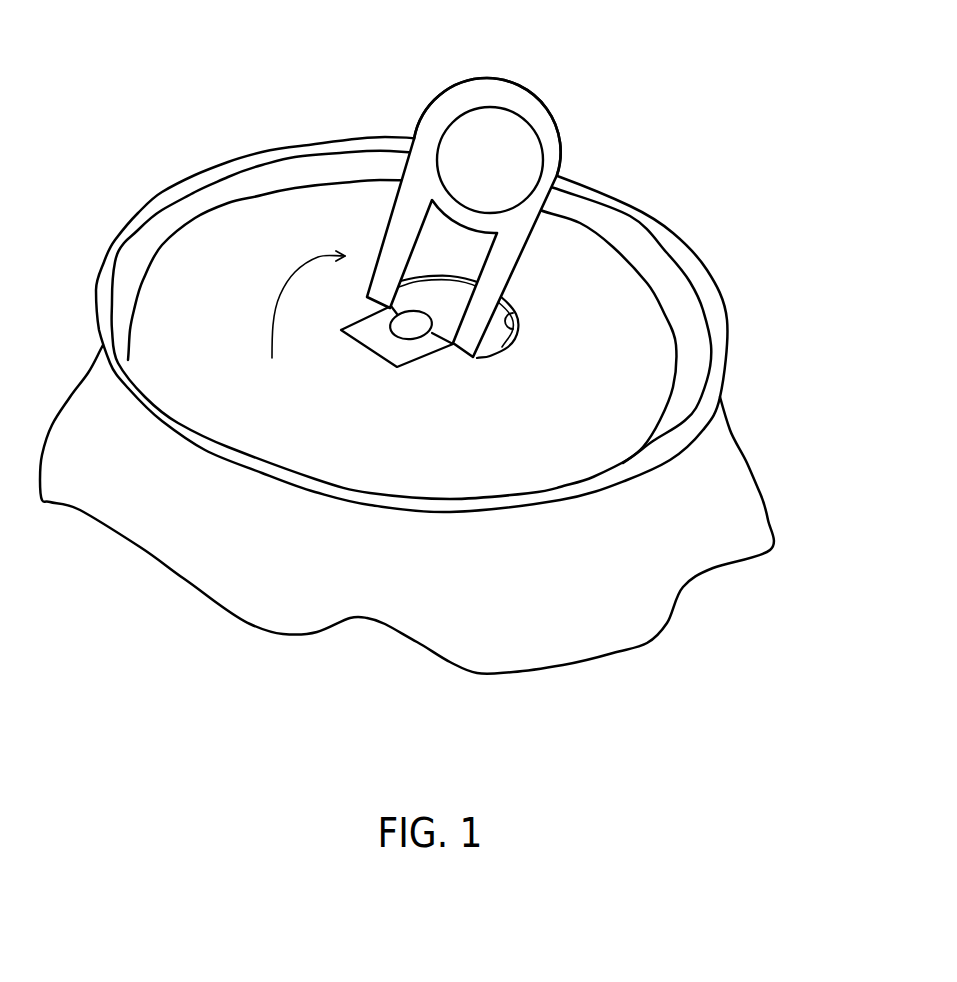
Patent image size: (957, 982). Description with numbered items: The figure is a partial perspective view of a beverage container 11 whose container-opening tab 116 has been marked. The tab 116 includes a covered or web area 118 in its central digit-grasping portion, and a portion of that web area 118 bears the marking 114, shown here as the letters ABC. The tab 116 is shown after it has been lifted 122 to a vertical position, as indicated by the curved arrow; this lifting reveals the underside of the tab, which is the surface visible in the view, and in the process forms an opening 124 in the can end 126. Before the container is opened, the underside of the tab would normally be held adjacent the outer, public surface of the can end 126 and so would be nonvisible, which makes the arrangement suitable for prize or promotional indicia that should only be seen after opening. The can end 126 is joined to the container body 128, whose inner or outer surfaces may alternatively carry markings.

The beverage container 11 is at (762, 438).
The marking 114 is at (484, 125).
The tab 116 is at (541, 111).
The web area 118 is at (557, 189).
The lifting of the tab 122 is at (296, 270).
The opening 124 is at (522, 330).
The can end 126 is at (627, 368).
The container body 128 is at (703, 525).